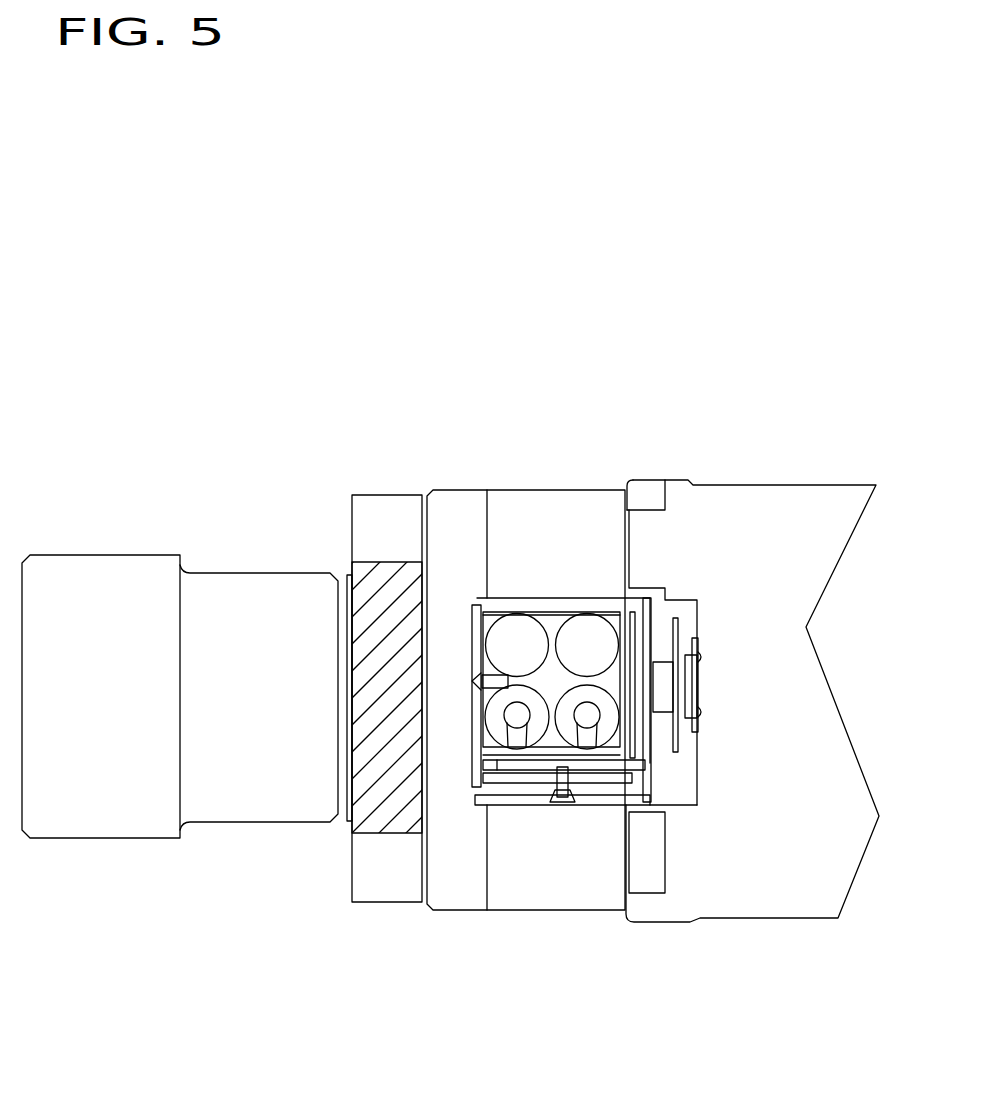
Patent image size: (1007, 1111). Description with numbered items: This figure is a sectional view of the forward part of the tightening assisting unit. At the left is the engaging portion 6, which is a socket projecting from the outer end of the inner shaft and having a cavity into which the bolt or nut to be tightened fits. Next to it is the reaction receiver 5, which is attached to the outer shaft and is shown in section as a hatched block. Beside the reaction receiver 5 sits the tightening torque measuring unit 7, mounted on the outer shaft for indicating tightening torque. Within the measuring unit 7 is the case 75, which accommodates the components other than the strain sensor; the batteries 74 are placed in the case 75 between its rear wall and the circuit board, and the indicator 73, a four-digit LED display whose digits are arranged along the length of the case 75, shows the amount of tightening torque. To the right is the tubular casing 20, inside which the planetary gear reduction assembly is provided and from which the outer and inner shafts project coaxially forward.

The engaging portion 6 is at (160, 538).
The reaction receiver 5 is at (381, 590).
The tightening torque measuring unit 7 is at (538, 605).
The batteries 74 is at (517, 632).
The case 75 is at (583, 630).
The indicator 73 is at (658, 656).
The tubular casing 20 is at (745, 870).